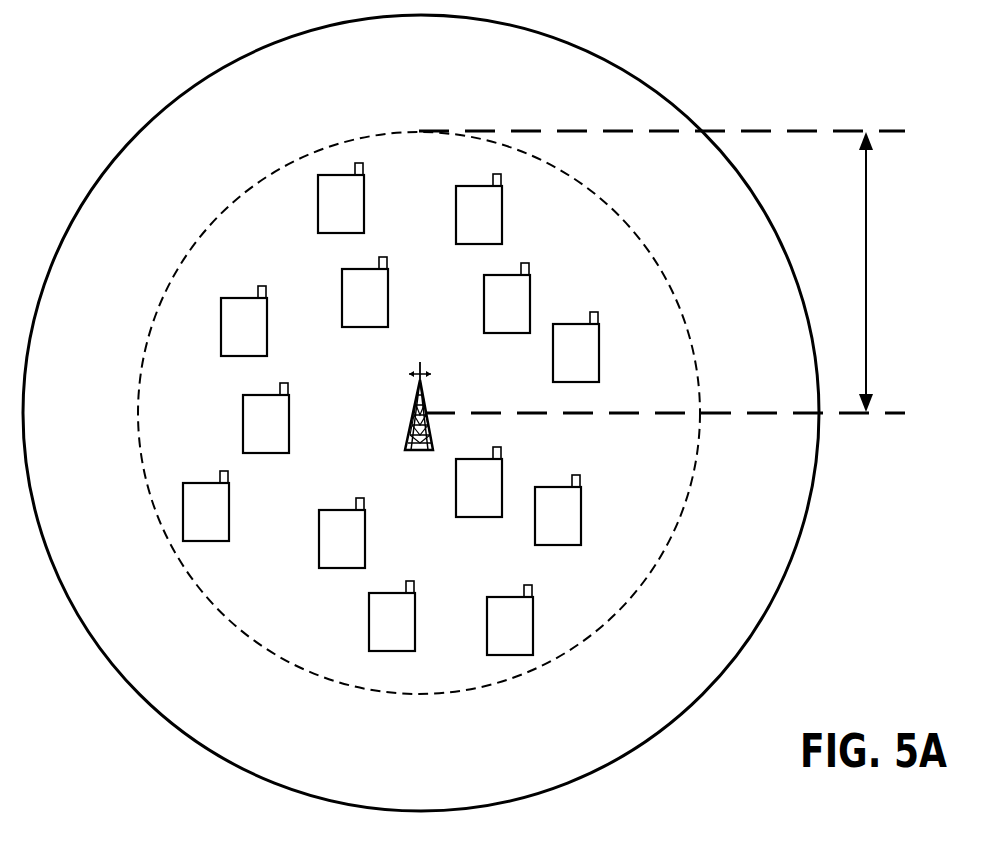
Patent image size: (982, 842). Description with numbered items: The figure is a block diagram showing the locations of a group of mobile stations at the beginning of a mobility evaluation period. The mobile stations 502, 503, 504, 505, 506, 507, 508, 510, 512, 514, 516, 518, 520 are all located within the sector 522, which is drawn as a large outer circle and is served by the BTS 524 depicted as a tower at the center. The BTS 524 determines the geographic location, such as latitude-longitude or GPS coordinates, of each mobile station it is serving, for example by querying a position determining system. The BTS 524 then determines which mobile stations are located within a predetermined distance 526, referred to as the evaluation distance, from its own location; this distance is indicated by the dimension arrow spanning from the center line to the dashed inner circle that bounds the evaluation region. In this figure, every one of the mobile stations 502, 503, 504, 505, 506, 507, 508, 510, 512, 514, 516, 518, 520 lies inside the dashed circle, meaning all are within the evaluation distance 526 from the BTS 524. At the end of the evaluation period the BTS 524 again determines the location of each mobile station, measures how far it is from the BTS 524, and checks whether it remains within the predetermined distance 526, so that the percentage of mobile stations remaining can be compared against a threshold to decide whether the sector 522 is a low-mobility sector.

The mobile station 502 is at (364, 208).
The mobile station 503 is at (289, 428).
The mobile station 504 is at (530, 308).
The mobile station 505 is at (502, 219).
The mobile station 506 is at (599, 357).
The mobile station 507 is at (502, 492).
The mobile station 508 is at (581, 520).
The mobile station 510 is at (388, 302).
The mobile station 512 is at (267, 331).
The mobile station 514 is at (229, 516).
The mobile station 516 is at (365, 543).
The mobile station 518 is at (415, 626).
The mobile station 520 is at (533, 630).
The sector 522 is at (152, 117).
The BTS 524 is at (413, 415).
The predetermined distance 526 is at (662, 272).